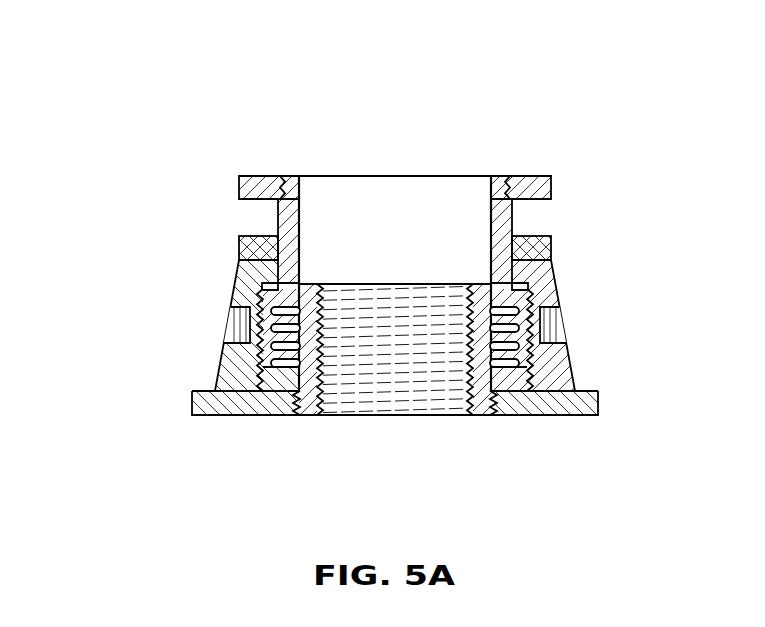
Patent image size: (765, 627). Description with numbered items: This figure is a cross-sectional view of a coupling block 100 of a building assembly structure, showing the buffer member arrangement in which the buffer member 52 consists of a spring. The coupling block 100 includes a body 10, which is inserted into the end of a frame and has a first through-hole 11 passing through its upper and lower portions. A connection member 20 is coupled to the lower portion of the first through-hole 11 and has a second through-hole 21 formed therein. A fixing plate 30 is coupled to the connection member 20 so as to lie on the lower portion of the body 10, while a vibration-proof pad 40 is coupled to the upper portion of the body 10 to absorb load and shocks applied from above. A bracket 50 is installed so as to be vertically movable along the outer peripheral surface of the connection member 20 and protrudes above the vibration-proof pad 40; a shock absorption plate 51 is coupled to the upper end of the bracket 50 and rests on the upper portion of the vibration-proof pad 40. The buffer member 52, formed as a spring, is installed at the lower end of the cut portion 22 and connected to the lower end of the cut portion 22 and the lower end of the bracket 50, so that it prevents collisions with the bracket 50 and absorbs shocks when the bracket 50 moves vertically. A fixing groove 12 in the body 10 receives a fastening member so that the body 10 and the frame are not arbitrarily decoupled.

The coupling block 100 is at (449, 144).
The body 10 is at (558, 360).
The first through-hole 11 is at (536, 302).
The fixing groove 12 is at (548, 320).
The connection member 20 is at (472, 397).
The second through-hole 21 is at (342, 403).
The cut portion 22 is at (268, 331).
The fixing plate 30 is at (541, 378).
The vibration-proof pad 40 is at (262, 215).
The bracket 50 is at (292, 213).
The shock absorption plate 51 is at (261, 184).
The buffer member 52 is at (258, 343).